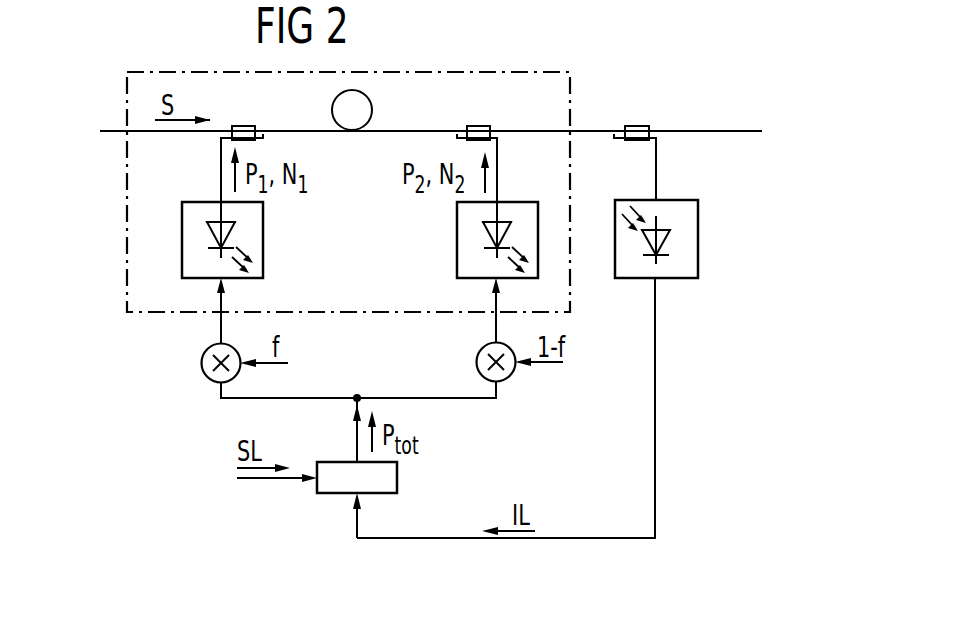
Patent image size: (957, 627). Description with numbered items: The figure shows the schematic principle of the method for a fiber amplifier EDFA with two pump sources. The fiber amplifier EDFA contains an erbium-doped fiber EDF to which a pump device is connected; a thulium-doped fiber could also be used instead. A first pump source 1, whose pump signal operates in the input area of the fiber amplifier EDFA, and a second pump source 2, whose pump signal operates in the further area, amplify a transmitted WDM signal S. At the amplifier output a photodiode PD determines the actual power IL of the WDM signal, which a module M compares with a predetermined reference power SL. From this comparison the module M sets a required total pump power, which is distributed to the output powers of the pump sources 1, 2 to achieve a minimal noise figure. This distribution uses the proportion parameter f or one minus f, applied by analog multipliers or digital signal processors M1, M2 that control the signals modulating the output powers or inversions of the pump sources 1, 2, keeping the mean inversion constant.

The first pump source 1 is at (182, 241).
The second pump source 2 is at (457, 241).
The photodiode PD is at (698, 233).
The module M is at (397, 472).
The analog multiplier or digital signal processor M1 is at (201, 364).
The analog multiplier or digital signal processor M2 is at (476, 363).
The erbium-doped fiber EDF is at (372, 113).
The fiber amplifier EDFA is at (570, 103).